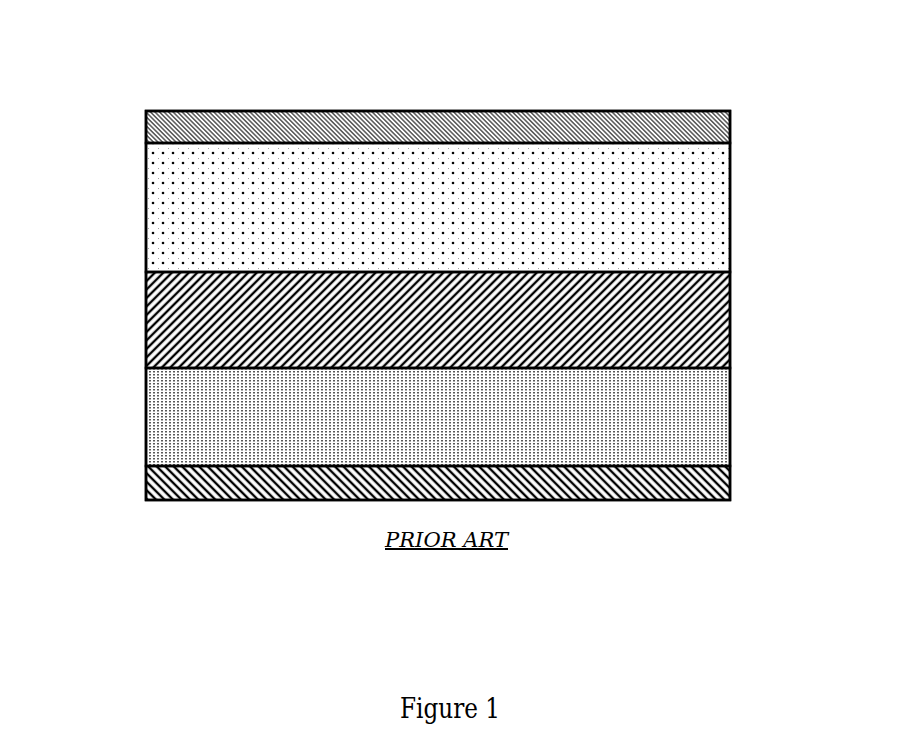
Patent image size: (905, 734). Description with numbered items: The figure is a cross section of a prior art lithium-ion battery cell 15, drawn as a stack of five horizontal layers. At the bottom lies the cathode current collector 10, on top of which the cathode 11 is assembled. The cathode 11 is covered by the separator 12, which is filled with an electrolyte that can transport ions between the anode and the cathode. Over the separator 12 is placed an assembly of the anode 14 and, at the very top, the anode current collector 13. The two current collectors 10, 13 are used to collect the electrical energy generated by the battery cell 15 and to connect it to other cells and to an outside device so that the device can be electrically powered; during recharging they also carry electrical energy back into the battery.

The cathode current collector 10 is at (197, 473).
The cathode 11 is at (157, 399).
The separator 12 is at (695, 312).
The anode current collector 13 is at (640, 117).
The anode 14 is at (163, 197).
The battery cell 15 is at (282, 555).